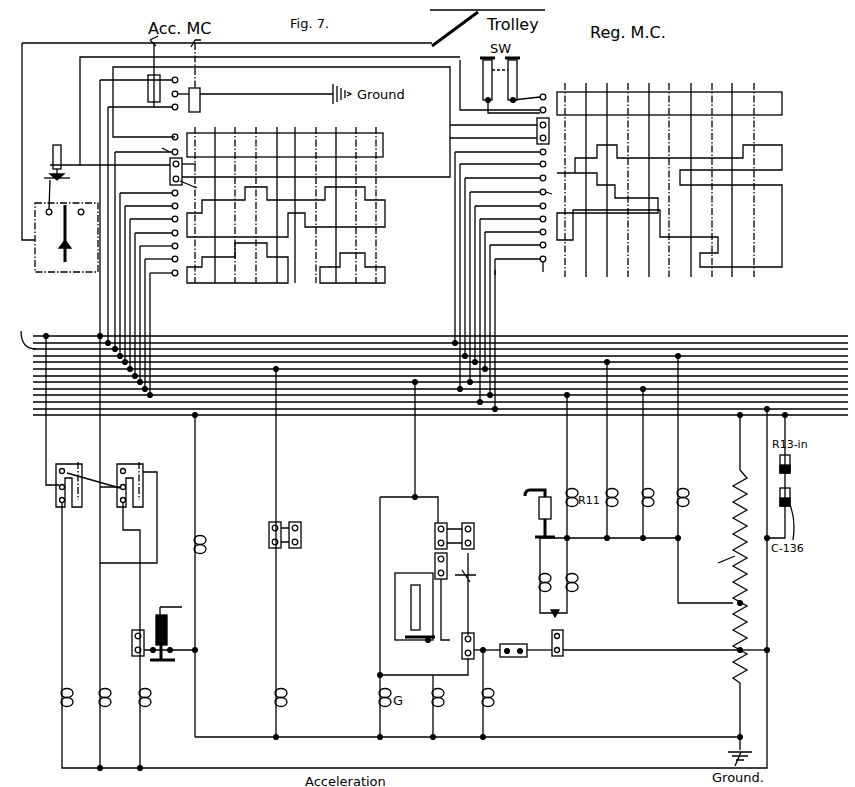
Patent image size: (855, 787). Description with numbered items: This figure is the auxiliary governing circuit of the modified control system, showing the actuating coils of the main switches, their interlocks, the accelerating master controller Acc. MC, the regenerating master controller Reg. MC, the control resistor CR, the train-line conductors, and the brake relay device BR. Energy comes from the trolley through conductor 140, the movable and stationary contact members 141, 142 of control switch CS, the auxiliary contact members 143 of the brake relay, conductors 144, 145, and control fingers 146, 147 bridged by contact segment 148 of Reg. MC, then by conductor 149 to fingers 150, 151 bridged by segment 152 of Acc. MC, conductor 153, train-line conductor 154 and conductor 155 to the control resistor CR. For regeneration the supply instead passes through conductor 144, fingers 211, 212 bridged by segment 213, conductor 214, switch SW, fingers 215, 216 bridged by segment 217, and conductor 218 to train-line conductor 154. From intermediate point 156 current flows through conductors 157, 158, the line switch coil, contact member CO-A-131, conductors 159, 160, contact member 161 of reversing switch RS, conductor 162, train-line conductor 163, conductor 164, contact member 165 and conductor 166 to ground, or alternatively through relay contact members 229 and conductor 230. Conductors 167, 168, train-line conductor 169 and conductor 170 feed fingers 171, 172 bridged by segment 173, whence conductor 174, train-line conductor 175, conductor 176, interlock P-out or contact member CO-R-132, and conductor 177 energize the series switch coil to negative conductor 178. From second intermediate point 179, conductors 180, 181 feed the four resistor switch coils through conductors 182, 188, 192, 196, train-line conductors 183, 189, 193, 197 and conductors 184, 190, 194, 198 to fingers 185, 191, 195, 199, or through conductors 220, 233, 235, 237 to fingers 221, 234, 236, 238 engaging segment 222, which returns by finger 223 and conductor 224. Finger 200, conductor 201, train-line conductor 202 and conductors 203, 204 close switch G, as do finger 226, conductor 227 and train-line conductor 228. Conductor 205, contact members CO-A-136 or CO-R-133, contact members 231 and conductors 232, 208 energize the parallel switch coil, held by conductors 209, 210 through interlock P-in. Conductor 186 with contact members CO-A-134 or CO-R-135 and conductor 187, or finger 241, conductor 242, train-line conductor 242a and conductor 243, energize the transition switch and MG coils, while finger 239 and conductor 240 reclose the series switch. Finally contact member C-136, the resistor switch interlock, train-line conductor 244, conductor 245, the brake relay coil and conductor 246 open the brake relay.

The conductor 140 is at (436, 22).
The movable contact member 141 is at (64, 228).
The stationary contact member 142 is at (54, 191).
The auxiliary contact members 143 is at (44, 161).
The conductor 144 is at (110, 171).
The conductor 145 is at (400, 178).
The control finger 146 is at (549, 138).
The control finger 147 is at (549, 125).
The contact segment 148 is at (537, 131).
The conductor 149 is at (500, 93).
The control finger 150 is at (139, 102).
The control finger 151 is at (166, 150).
The contact segment 152 is at (285, 199).
The conductor 153 is at (146, 144).
The train-line conductor 154 is at (204, 349).
The conductor 155 is at (745, 442).
The intermediate point 156 is at (745, 650).
The conductor 157 is at (760, 660).
The conductor 158 is at (771, 664).
The conductor 159 is at (140, 583).
The conductor 160 is at (125, 507).
The contact member 161 is at (59, 500).
The conductor 162 is at (46, 441).
The train-line conductor 163 is at (70, 336).
The conductor 164 is at (100, 300).
The contact member 165 is at (139, 71).
The conductor 166 is at (264, 76).
The conductor 167 is at (767, 603).
The conductor 168 is at (731, 576).
The train-line conductor 169 is at (740, 415).
The conductor 170 is at (132, 349).
The control finger 171 is at (159, 240).
The control finger 172 is at (156, 227).
The contact segment 173 is at (365, 204).
The conductor 174 is at (154, 213).
The train-line conductor 175 is at (227, 369).
The conductor 176 is at (276, 442).
The conductor 177 is at (276, 594).
The negative conductor 178 is at (342, 750).
The second intermediate point 179 is at (712, 617).
The conductor 180 is at (680, 617).
The conductor 181 is at (663, 538).
The conductor 182 is at (568, 442).
The train-line conductor 183 is at (513, 362).
The conductor 184 is at (143, 360).
The control finger 185 is at (144, 251).
The conductor 186 is at (705, 659).
The conductor 187 is at (485, 679).
The conductor 188 is at (608, 442).
The train-line conductor 189 is at (593, 356).
The conductor 190 is at (124, 336).
The control finger 191 is at (151, 200).
The conductor 192 is at (643, 442).
The train-line conductor 193 is at (633, 369).
The conductor 194 is at (150, 320).
The control finger 195 is at (161, 268).
The conductor 196 is at (678, 442).
The train-line conductor 197 is at (670, 349).
The conductor 198 is at (112, 288).
The control finger 199 is at (149, 187).
The control finger 200 is at (160, 254).
The conductor 201 is at (160, 340).
The train-line conductor 202 is at (258, 382).
The conductor 203 is at (415, 442).
The conductor 204 is at (410, 586).
The conductor 205 is at (433, 497).
The conductor 208 is at (470, 661).
The conductor 209 is at (457, 646).
The conductor 210 is at (453, 706).
The control finger 211 is at (199, 187).
The control finger 212 is at (199, 163).
The contact segment 213 is at (170, 172).
The conductor 214 is at (80, 108).
The control finger 215 is at (532, 88).
The control finger 216 is at (532, 105).
The contact segment 217 is at (660, 115).
The conductor 218 is at (443, 271).
The conductor 220 is at (497, 297).
The control finger 221 is at (520, 255).
The contact segment 222 is at (672, 222).
The control finger 223 is at (518, 241).
The conductor 224 is at (515, 228).
The control finger 226 is at (508, 187).
The conductor 227 is at (505, 176).
The train-line conductor 228 is at (438, 382).
The contact members 229 is at (169, 649).
The conductor 230 is at (455, 728).
The contact members 231 is at (495, 565).
The conductor 232 is at (455, 609).
The conductor 233 is at (468, 292).
The control finger 234 is at (503, 163).
The conductor 235 is at (462, 254).
The control finger 236 is at (500, 150).
The conductor 237 is at (458, 240).
The control finger 238 is at (558, 193).
The control finger 239 is at (513, 215).
The conductor 240 is at (510, 202).
The control finger 241 is at (558, 274).
The conductor 242 is at (475, 278).
The train-line conductor 242a is at (476, 415).
The conductor 243 is at (490, 442).
The train-line conductor 244 is at (565, 415).
The conductor 245 is at (197, 500).
The conductor 246 is at (197, 594).
The contact member CO-A- 131 is at (133, 636).
The contact member CO-R- 132 is at (297, 535).
The contact member CO-R- 133 is at (478, 530).
The contact segment CO-A- 134 is at (525, 660).
The contact member CO-R- 135 is at (563, 647).
The contact member CO-A- 136 is at (416, 566).